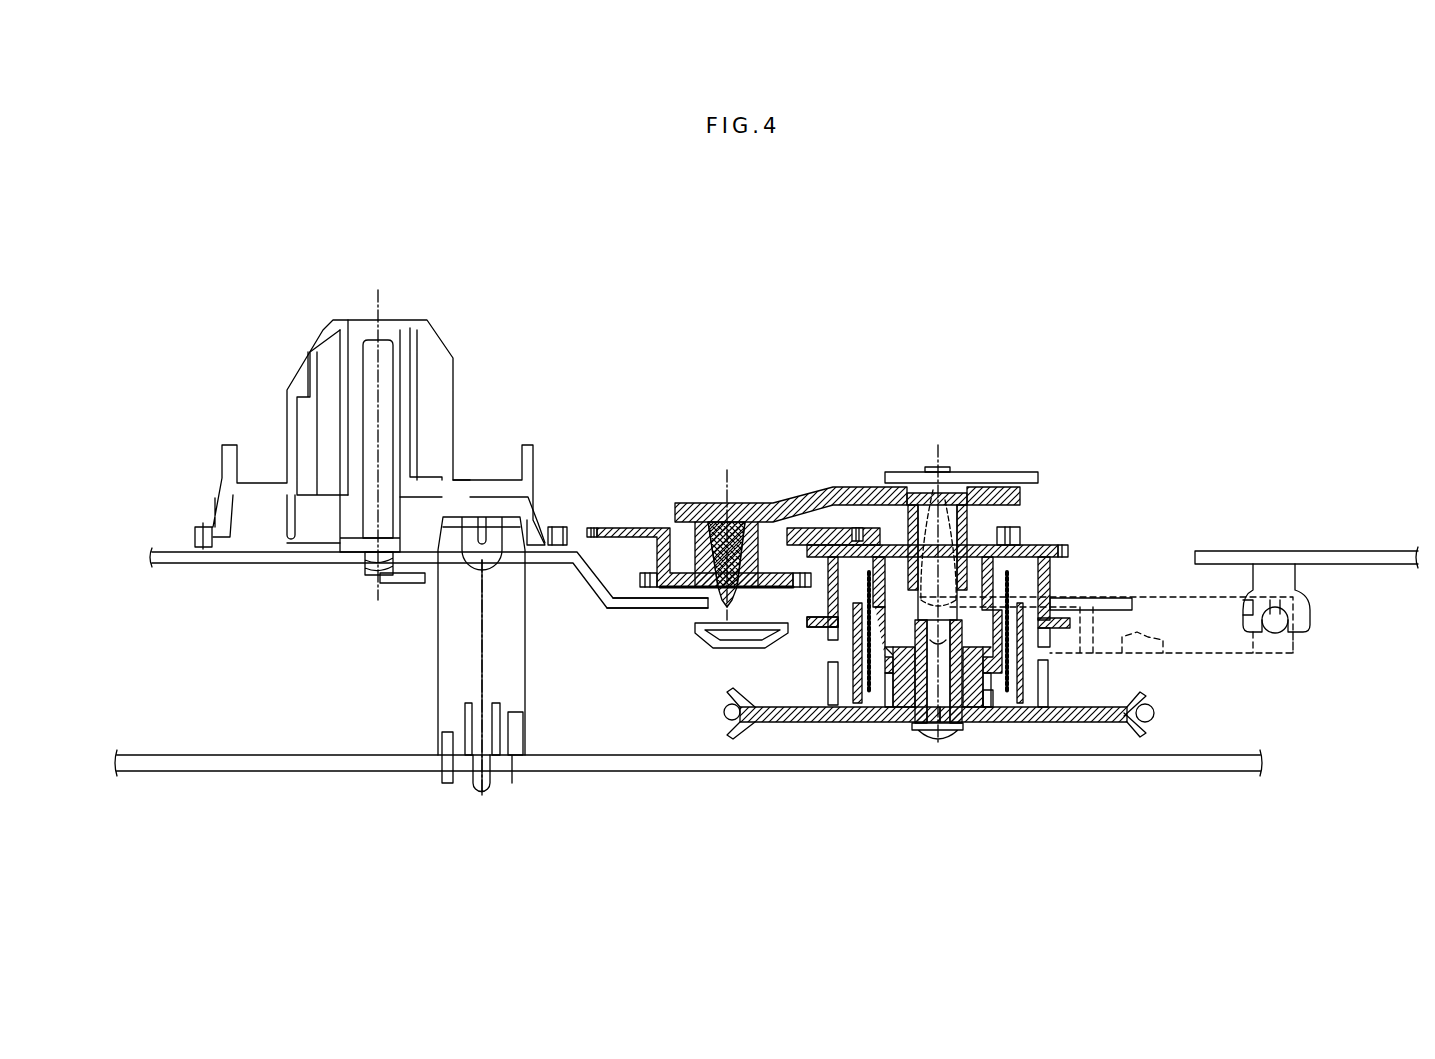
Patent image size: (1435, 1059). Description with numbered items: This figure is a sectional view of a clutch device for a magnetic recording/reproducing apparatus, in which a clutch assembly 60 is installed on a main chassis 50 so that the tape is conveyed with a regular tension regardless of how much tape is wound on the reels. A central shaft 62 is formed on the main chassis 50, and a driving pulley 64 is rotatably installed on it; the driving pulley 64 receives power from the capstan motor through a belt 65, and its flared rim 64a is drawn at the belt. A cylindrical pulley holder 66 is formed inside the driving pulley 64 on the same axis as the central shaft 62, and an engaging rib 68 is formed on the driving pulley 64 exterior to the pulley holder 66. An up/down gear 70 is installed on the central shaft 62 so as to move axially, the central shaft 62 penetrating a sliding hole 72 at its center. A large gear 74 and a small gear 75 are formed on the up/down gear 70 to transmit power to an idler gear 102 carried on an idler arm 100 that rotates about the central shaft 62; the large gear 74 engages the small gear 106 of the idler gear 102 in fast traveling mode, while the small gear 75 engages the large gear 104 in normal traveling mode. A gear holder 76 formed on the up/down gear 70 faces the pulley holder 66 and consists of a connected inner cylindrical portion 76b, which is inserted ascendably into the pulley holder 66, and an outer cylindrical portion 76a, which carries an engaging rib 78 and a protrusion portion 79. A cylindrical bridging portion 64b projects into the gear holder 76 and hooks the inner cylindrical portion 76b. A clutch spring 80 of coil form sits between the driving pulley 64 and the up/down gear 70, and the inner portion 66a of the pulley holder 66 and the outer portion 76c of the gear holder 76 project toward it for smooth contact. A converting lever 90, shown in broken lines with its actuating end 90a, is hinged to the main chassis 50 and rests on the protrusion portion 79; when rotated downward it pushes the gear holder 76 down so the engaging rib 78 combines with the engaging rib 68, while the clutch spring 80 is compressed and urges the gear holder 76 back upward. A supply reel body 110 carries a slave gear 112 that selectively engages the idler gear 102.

The main chassis 50 is at (1018, 477).
The clutch assembly 60 is at (800, 728).
The central shaft 62 is at (927, 742).
The driving pulley 64 is at (1070, 728).
The flared end 64a is at (1098, 718).
The cylindrical bridging portion 64b is at (1000, 700).
The belt 65 is at (1150, 720).
The pulley holder 66 is at (857, 690).
The inner portion 66a is at (882, 705).
The engaging rib 68 is at (830, 705).
The up/down gear 70 is at (1067, 530).
The sliding hole 72 is at (938, 540).
The large gear 74 is at (1070, 553).
The small gear 75 is at (1017, 532).
The gear holder 76 is at (832, 390).
The outer cylindrical portion 76a is at (845, 555).
The inner cylindrical portion 76b is at (890, 560).
The outer portion 76c is at (1013, 588).
The engaging rib 78 is at (827, 637).
The protrusion portion 79 is at (810, 620).
The clutch spring 80 is at (990, 722).
The converting lever 90 is at (1227, 653).
The actuator ball 90a is at (930, 487).
The idler arm 100 is at (805, 487).
The idler gear 102 is at (648, 528).
The large gear 104 is at (595, 527).
The small gear 106 is at (642, 578).
The supply reel body 110 is at (442, 316).
The slave gear 112 is at (560, 527).